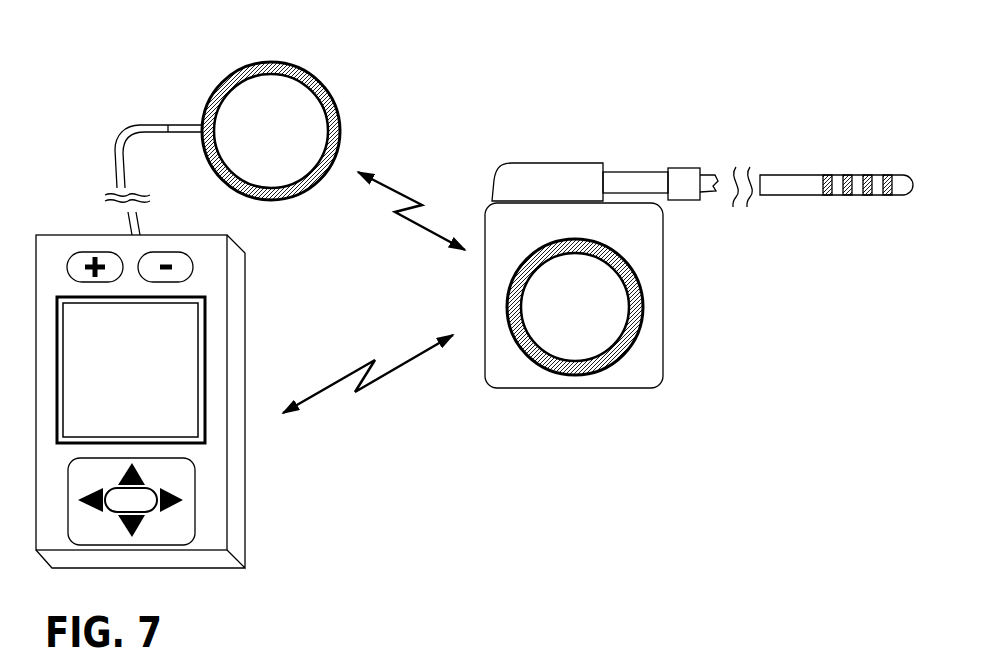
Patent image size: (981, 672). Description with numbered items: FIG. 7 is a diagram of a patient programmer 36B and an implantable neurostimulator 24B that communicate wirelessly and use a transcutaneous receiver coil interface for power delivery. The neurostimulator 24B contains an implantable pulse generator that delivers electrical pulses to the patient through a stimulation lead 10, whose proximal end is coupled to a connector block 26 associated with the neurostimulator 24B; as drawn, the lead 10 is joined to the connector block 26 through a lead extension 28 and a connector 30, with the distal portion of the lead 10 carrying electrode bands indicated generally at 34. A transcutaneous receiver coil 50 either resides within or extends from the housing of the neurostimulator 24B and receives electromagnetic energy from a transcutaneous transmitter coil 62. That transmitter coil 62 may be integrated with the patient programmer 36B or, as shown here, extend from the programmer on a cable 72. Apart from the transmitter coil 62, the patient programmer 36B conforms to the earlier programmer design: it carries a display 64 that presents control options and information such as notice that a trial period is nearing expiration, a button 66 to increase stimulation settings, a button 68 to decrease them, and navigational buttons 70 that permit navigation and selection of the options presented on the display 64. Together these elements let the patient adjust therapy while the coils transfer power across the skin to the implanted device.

The stimulation lead 10 is at (785, 180).
The implantable neurostimulator 24B is at (663, 295).
The connector block 26 is at (568, 163).
The lead extension 28 is at (648, 172).
The connector 30 is at (685, 168).
The marker bands 34 is at (856, 225).
The patient programmer 36B is at (233, 292).
The transcutaneous receiver coil 50 is at (552, 363).
The transcutaneous transmitter coil 62 is at (302, 95).
The display 64 is at (180, 348).
The button 66 is at (67, 266).
The button 68 is at (168, 258).
The navigational buttons 70 is at (177, 525).
The cable 72 is at (167, 123).